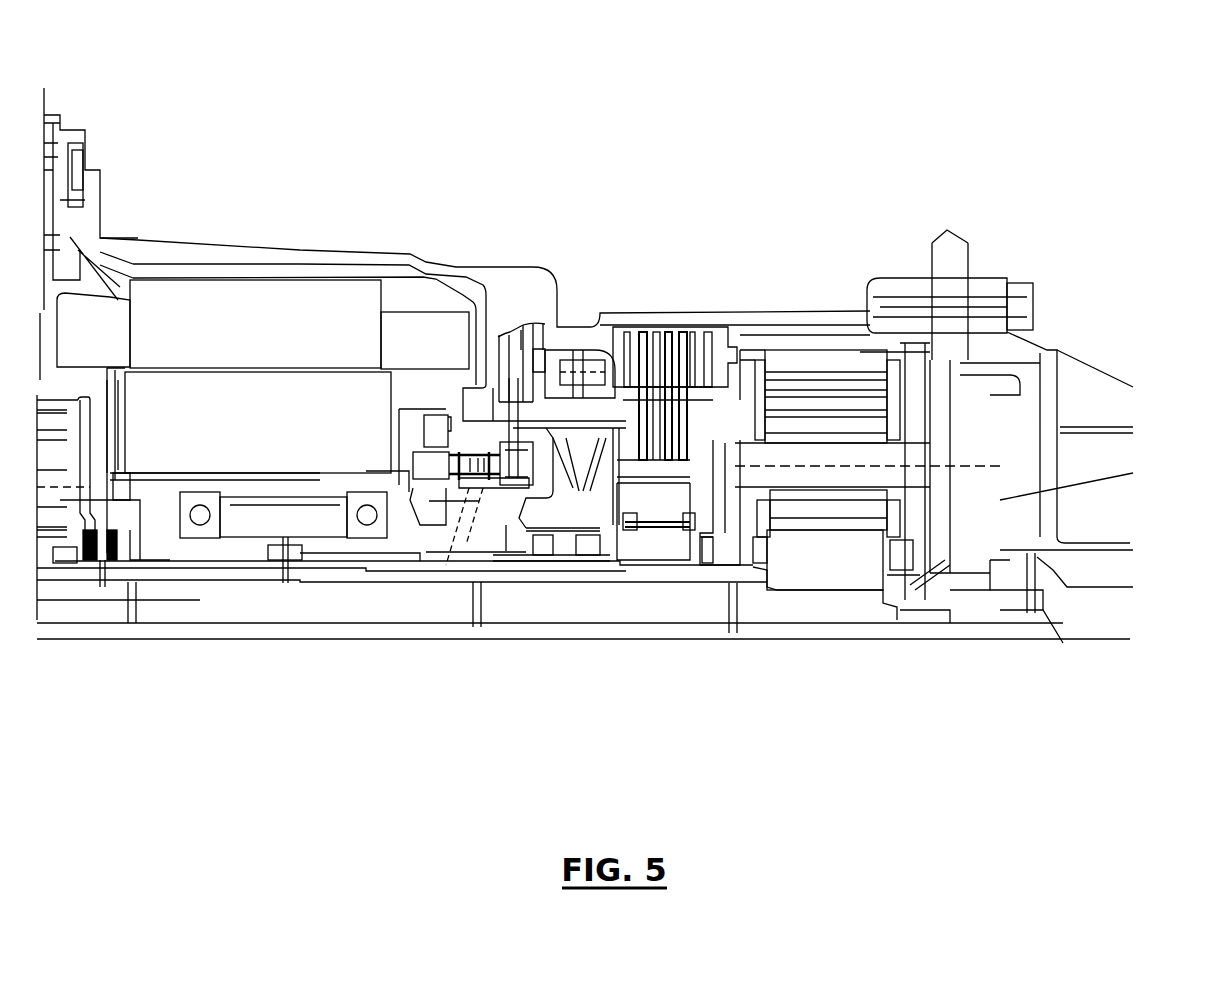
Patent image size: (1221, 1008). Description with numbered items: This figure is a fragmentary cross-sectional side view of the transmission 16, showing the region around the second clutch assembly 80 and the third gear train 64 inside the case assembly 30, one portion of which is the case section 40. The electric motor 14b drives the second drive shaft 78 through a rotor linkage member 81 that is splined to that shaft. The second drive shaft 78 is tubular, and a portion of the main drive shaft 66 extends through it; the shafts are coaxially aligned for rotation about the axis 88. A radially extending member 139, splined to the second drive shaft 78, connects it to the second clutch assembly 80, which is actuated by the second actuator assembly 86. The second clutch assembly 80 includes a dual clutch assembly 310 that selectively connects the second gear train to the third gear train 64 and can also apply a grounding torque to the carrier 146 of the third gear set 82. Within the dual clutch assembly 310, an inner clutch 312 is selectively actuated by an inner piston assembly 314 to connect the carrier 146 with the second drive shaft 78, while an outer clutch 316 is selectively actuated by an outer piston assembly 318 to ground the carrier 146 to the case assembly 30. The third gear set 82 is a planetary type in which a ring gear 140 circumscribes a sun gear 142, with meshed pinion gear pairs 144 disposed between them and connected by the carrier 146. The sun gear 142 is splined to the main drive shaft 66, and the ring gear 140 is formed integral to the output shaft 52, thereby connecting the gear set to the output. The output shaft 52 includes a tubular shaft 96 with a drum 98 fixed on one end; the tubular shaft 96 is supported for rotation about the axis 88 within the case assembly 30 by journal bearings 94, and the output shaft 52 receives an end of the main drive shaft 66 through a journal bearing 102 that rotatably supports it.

The transmission 16 is at (156, 57).
The case assembly 30 is at (118, 238).
The electric motor 14b is at (282, 321).
The rotor linkage member 81 is at (130, 505).
The main drive shaft 66 is at (182, 607).
The second drive shaft 78 is at (270, 572).
The second actuator assembly 86 is at (515, 310).
The outer piston assembly 318 is at (577, 350).
The dual clutch assembly 310 is at (665, 315).
The outer clutch 316 is at (652, 330).
The second clutch assembly 80 is at (684, 322).
The third gear train 64 is at (825, 362).
The ring gear 140 is at (800, 360).
The third gear set 82 is at (845, 378).
The case section 40 is at (985, 278).
The meshed pinion gear pairs 144 is at (908, 388).
The drum 98 is at (950, 425).
The tubular shaft 96 is at (1110, 605).
The axis 88 is at (1120, 640).
The output shaft 52 is at (1093, 628).
The journal bearings 94 is at (1012, 613).
The journal bearing 102 is at (915, 615).
The sun gear 142 is at (813, 563).
The carrier 146 is at (722, 525).
The radially extending member 139 is at (677, 548).
The inner clutch 312 is at (597, 433).
The inner piston assembly 314 is at (553, 460).